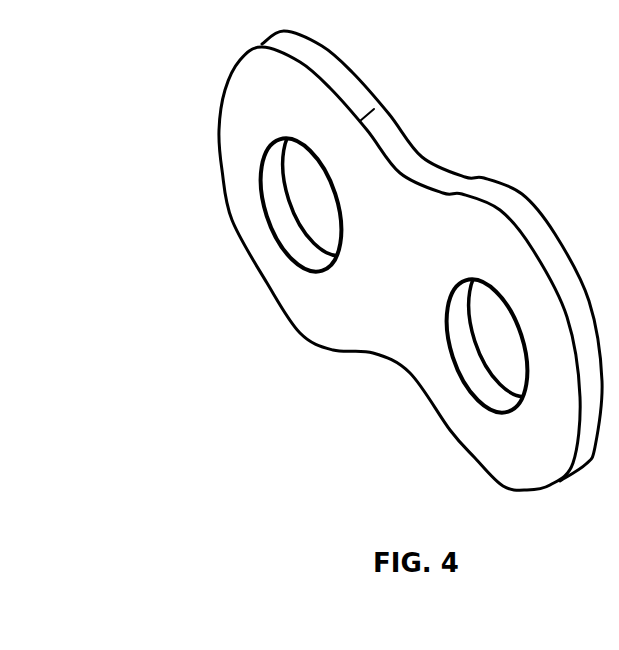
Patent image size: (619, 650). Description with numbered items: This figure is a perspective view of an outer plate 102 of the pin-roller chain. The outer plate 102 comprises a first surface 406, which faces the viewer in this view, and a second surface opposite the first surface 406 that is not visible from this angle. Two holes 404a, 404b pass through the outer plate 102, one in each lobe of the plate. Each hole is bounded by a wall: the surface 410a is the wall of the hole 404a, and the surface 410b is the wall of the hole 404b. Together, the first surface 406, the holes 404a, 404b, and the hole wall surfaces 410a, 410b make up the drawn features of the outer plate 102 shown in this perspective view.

The outer plate 102 is at (317, 258).
The hole 404a is at (206, 209).
The hole 404b is at (414, 373).
The first surface 406 is at (372, 303).
The surface 410a is at (273, 177).
The surface 410b is at (472, 363).